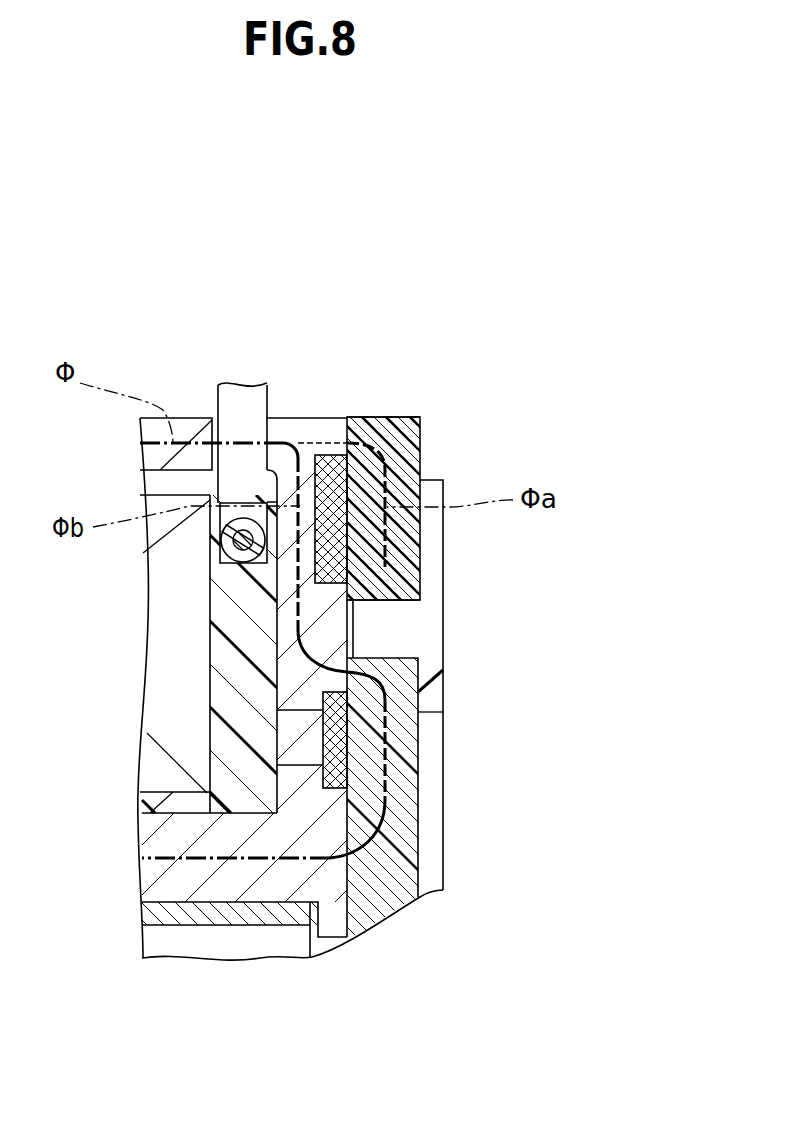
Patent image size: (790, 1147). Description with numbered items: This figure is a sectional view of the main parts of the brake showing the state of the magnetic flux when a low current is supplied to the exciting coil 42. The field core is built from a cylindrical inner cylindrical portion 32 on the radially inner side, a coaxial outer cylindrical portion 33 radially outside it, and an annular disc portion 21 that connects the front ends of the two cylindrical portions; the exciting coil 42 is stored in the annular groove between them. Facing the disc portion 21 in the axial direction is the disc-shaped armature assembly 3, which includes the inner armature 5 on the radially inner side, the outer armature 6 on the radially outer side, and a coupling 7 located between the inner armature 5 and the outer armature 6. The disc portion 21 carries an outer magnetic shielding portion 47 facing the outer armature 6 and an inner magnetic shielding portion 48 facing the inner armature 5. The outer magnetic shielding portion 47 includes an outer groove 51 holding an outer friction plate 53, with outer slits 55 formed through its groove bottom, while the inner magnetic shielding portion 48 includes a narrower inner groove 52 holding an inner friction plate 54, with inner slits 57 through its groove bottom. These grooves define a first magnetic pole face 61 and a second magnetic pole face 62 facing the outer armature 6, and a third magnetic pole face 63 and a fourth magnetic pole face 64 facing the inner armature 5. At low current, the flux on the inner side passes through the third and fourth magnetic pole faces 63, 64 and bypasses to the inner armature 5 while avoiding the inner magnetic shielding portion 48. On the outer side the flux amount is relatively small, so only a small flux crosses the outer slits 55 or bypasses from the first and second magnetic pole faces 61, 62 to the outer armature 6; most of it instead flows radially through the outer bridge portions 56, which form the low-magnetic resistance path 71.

The armature assembly 3 is at (460, 540).
The inner armature 5 is at (420, 859).
The outer armature 6 is at (430, 450).
The coupling 7 is at (418, 712).
The disc portion 21 is at (330, 625).
The inner cylindrical portion 32 is at (170, 882).
The outer cylindrical portion 33 is at (140, 426).
The exciting coil 42 is at (175, 640).
The outer magnetic shielding portion 47 is at (325, 430).
The inner magnetic shielding portion 48 is at (310, 803).
The outer groove 51 is at (430, 470).
The inner groove 52 is at (432, 803).
The outer friction plate 53 is at (420, 550).
The inner friction plate 54 is at (347, 753).
The outer slits 55 is at (220, 537).
The outer bridge portions 56 is at (287, 487).
The inner slits 57 is at (350, 728).
The first magnetic pole face 61 is at (430, 428).
The second magnetic pole face 62 is at (430, 592).
The third magnetic pole face 63 is at (443, 673).
The fourth magnetic pole face 64 is at (415, 822).
The low-magnetic resistance path 71 is at (235, 655).